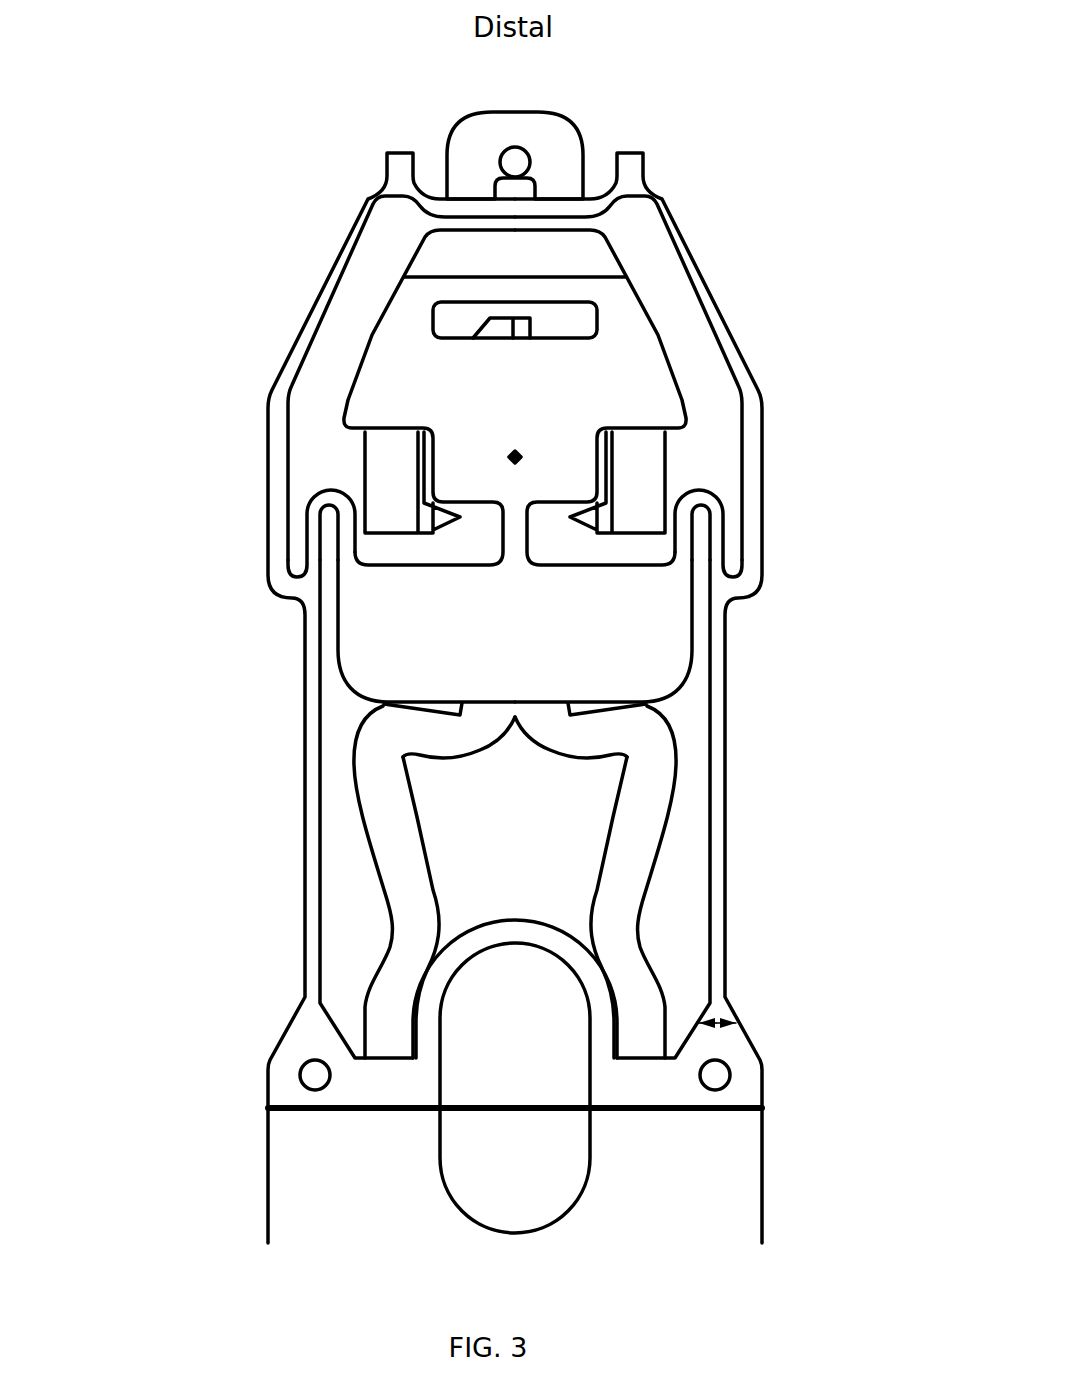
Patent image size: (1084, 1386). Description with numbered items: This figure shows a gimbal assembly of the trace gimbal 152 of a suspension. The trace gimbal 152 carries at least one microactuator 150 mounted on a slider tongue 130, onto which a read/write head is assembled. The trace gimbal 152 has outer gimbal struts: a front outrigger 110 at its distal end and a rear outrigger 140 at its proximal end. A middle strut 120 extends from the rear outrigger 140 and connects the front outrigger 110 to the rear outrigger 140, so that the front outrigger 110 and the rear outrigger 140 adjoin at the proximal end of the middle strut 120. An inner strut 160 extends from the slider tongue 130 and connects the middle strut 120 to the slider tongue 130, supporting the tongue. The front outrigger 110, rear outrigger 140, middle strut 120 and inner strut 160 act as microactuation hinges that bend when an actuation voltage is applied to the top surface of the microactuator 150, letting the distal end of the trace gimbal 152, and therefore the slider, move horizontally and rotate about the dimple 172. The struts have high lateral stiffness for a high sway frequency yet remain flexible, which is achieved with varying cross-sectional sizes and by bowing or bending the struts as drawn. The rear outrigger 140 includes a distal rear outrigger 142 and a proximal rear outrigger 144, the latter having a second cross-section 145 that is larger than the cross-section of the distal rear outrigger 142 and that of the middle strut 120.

The front outrigger 110 is at (297, 313).
The middle strut 120 is at (303, 542).
The slider tongue 130 is at (373, 640).
The rear outrigger 140 is at (297, 847).
The distal rear outrigger 142 is at (740, 715).
The proximal rear outrigger 144 is at (752, 1024).
The second cross-section 145 is at (717, 1038).
The microactuator 150 is at (378, 475).
The trace gimbal 152 is at (142, 163).
The inner strut 160 is at (693, 548).
The dimple 172 is at (537, 445).